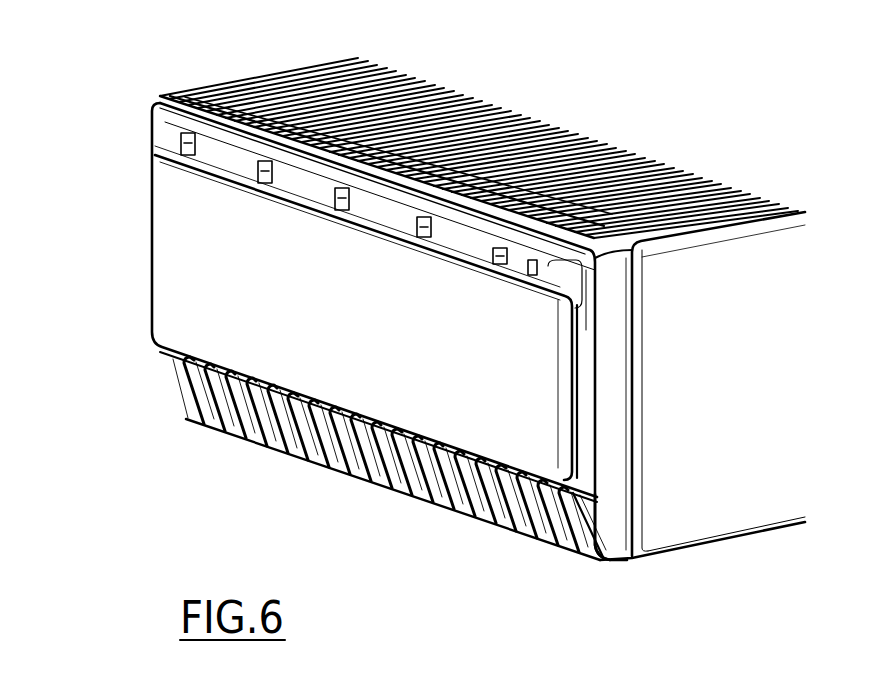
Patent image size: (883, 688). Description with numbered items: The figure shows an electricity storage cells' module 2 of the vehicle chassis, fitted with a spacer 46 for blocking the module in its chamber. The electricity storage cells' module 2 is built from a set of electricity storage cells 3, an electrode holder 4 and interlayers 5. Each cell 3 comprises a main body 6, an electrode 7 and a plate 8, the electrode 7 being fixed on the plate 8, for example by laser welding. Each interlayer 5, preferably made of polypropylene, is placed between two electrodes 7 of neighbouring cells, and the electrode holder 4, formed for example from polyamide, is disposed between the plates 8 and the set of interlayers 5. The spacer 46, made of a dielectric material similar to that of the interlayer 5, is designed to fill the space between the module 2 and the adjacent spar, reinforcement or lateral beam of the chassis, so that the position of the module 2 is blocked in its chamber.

The electricity storage cells' module 2 is at (617, 73).
The electricity storage cell 3 is at (755, 405).
The electrode holder 4 is at (163, 128).
The interlayer 5 is at (213, 402).
The main body 6 is at (722, 493).
The electrode 7 is at (608, 523).
The plate 8 is at (180, 145).
The spacer 46 is at (173, 310).